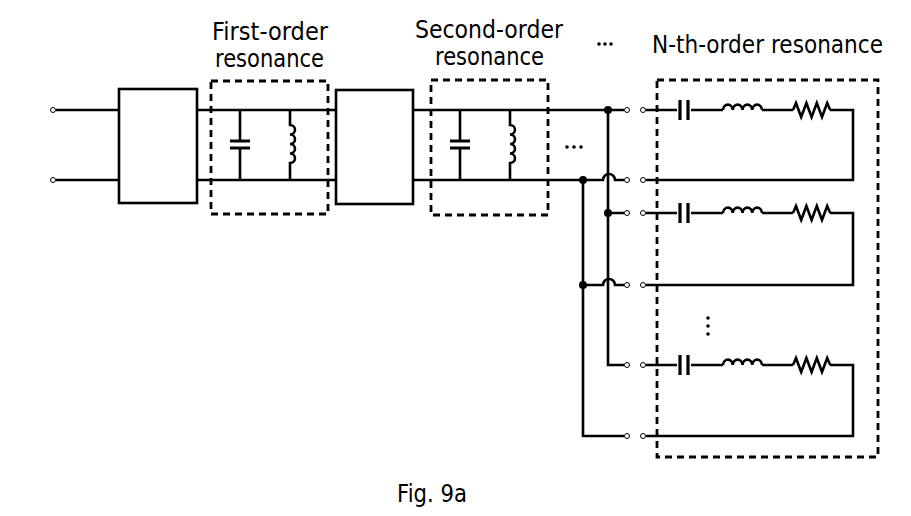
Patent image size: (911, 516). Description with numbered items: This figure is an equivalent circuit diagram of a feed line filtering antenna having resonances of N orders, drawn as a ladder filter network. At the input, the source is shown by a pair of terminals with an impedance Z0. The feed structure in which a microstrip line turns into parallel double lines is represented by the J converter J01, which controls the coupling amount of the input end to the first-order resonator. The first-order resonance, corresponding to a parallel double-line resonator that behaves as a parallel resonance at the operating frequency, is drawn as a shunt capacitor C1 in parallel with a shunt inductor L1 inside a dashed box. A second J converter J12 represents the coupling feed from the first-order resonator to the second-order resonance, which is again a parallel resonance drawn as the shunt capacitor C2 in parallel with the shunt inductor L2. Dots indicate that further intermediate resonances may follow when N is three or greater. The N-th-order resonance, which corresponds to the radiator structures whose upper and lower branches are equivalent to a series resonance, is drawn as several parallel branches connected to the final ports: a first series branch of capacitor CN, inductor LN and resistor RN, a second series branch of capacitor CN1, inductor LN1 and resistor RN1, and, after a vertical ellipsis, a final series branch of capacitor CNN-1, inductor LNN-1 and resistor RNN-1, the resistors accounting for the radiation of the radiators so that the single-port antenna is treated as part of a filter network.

The source impedance Z0 is at (74, 145).
The J converter J01 is at (158, 146).
The J converter J12 is at (374, 147).
The first-order resonance capacitor C1 is at (253, 145).
The first-order resonance inductor L1 is at (305, 145).
The second-order resonance capacitor C2 is at (472, 145).
The second-order resonance inductor L2 is at (526, 145).
The N-th-order resonance capacitor CN is at (688, 123).
The N-th-order resonance inductor LN is at (742, 126).
The N-th-order resonance resistor RN is at (811, 125).
The N-th-order resonance capacitor (branch 1) CN1 is at (694, 229).
The N-th-order resonance inductor (branch 1) LN1 is at (743, 231).
The N-th-order resonance resistor (branch 1) RN1 is at (812, 230).
The N-th-order resonance capacitor (branch N-1) CNN-1 is at (690, 380).
The N-th-order resonance inductor (branch N-1) LNN-1 is at (750, 382).
The N-th-order resonance resistor (branch N-1) RNN-1 is at (819, 381).